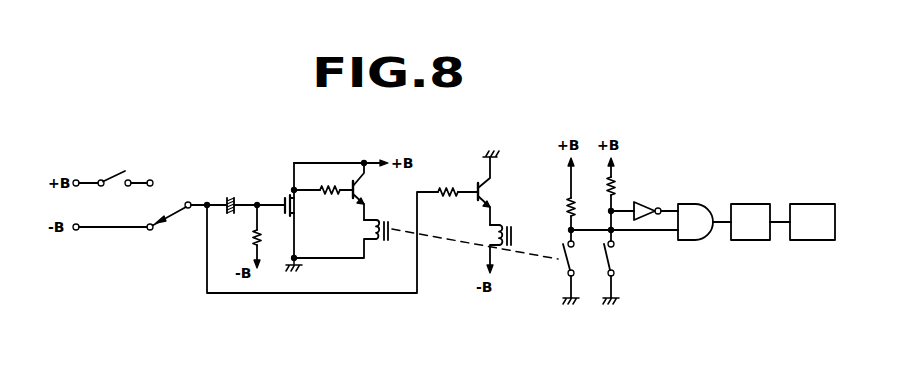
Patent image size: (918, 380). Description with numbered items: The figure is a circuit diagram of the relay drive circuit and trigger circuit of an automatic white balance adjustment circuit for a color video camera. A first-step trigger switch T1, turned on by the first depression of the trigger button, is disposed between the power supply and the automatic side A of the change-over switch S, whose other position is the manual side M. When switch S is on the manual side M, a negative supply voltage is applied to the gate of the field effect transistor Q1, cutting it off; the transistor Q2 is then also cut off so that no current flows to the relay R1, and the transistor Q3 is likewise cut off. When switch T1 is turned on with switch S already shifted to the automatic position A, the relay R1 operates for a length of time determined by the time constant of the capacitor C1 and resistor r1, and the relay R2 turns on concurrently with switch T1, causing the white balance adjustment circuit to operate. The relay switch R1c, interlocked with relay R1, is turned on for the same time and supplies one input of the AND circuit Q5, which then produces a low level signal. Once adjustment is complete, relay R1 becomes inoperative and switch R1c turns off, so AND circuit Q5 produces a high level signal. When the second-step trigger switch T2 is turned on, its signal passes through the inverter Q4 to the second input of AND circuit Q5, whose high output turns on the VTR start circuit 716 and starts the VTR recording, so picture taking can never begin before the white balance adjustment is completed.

The switch T1 is at (114, 171).
The automatic side A is at (150, 172).
The manual side M is at (151, 237).
The change-over switch S is at (172, 210).
The capacitor C1 is at (233, 197).
The resistor r1 is at (266, 236).
The field effect transistor Q1 is at (302, 210).
The transistor Q2 is at (370, 191).
The relay R1 is at (344, 240).
The transistor Q3 is at (495, 188).
The relay R2 is at (505, 236).
The switch R1c is at (559, 231).
The switch T2 is at (619, 231).
The inverter Q4 is at (647, 202).
The AND circuit Q5 is at (695, 222).
The VTR start circuit 716 is at (750, 222).
The video tape recorder VTR is at (812, 222).